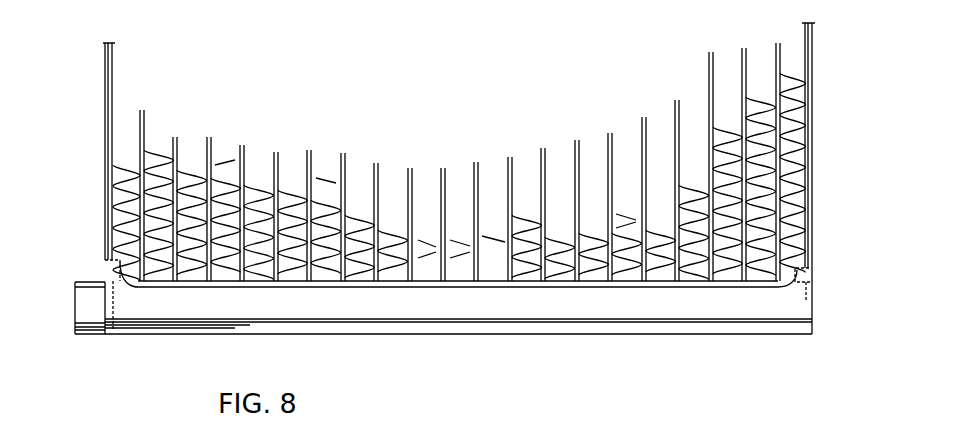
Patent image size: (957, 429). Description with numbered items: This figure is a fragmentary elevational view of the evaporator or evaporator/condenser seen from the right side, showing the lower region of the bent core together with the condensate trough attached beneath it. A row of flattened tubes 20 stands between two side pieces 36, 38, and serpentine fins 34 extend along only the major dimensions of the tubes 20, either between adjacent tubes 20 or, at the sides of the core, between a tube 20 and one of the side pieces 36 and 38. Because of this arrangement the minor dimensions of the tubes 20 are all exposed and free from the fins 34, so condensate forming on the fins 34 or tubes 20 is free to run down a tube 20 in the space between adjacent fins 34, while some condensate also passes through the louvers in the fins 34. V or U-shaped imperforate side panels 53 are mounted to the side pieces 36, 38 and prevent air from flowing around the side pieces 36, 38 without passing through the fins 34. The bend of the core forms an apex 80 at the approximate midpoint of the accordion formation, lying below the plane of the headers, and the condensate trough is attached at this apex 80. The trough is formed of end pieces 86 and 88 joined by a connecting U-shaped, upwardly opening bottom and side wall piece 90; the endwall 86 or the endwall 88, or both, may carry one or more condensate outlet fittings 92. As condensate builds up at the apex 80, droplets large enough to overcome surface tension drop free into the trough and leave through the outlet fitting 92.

The tube 20 is at (246, 160).
The serpentine fin 34 is at (118, 185).
The side piece 36 is at (809, 162).
The side piece 38 is at (112, 172).
The imperforate side panel 53 is at (106, 104).
The apex 80 is at (460, 283).
The end piece 86 is at (106, 276).
The end piece 88 is at (812, 307).
The bottom and side wall piece 90 is at (548, 308).
The condensate outlet fitting 92 is at (82, 332).